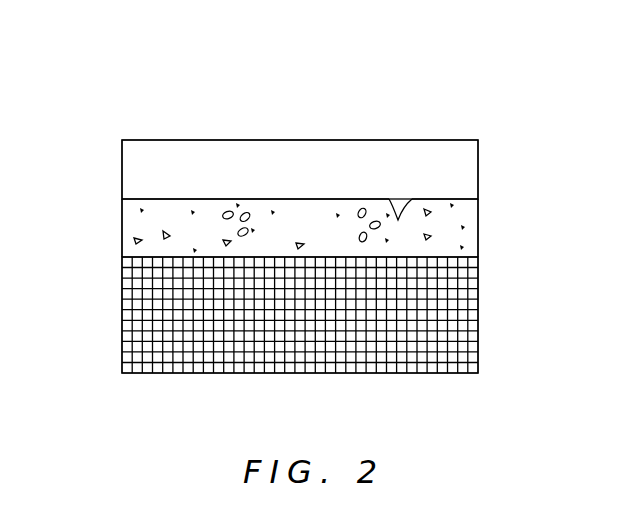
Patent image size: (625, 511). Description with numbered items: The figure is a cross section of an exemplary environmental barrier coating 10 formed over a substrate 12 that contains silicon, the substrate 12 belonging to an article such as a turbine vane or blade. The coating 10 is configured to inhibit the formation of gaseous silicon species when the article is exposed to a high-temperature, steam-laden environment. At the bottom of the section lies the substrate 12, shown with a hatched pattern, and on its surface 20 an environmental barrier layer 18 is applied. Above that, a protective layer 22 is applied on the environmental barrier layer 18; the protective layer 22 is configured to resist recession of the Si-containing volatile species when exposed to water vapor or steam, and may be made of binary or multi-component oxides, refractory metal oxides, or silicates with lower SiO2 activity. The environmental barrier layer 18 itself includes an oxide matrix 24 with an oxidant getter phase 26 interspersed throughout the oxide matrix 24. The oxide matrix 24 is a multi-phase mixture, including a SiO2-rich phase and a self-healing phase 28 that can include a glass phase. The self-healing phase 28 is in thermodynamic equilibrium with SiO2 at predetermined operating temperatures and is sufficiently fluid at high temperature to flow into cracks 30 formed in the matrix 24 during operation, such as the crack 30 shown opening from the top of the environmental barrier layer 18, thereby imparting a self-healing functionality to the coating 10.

The environmental barrier coating 10 is at (128, 99).
The substrate 12 is at (108, 336).
The environmental barrier layer 18 is at (112, 231).
The surface 20 is at (122, 257).
The protective layer 22 is at (112, 170).
The oxide matrix 24 is at (472, 212).
The oxidant getter phase 26 is at (366, 209).
The self-healing phase 28 is at (304, 202).
The cracks 30 is at (403, 192).